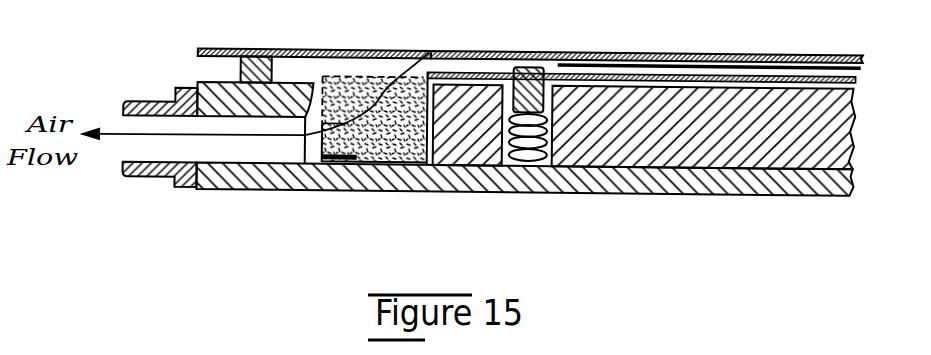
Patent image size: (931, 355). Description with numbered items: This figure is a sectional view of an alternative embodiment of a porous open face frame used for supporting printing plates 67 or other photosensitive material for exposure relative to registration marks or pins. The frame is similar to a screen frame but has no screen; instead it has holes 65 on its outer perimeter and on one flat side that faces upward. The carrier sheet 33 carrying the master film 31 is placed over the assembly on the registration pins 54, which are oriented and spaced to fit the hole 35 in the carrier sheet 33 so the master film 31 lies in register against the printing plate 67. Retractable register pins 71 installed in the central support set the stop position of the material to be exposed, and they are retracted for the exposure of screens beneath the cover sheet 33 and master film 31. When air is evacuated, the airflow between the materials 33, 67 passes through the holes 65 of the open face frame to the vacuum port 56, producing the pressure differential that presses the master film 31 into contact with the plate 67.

The master film 31 is at (665, 59).
The carrier sheet 33 is at (462, 47).
The hole 35 is at (268, 55).
The registration pins 54 is at (252, 48).
The vacuum port 56 is at (128, 151).
The holes 65 is at (428, 50).
The printing plate 67 is at (807, 70).
The retractable register pins 71 is at (530, 154).